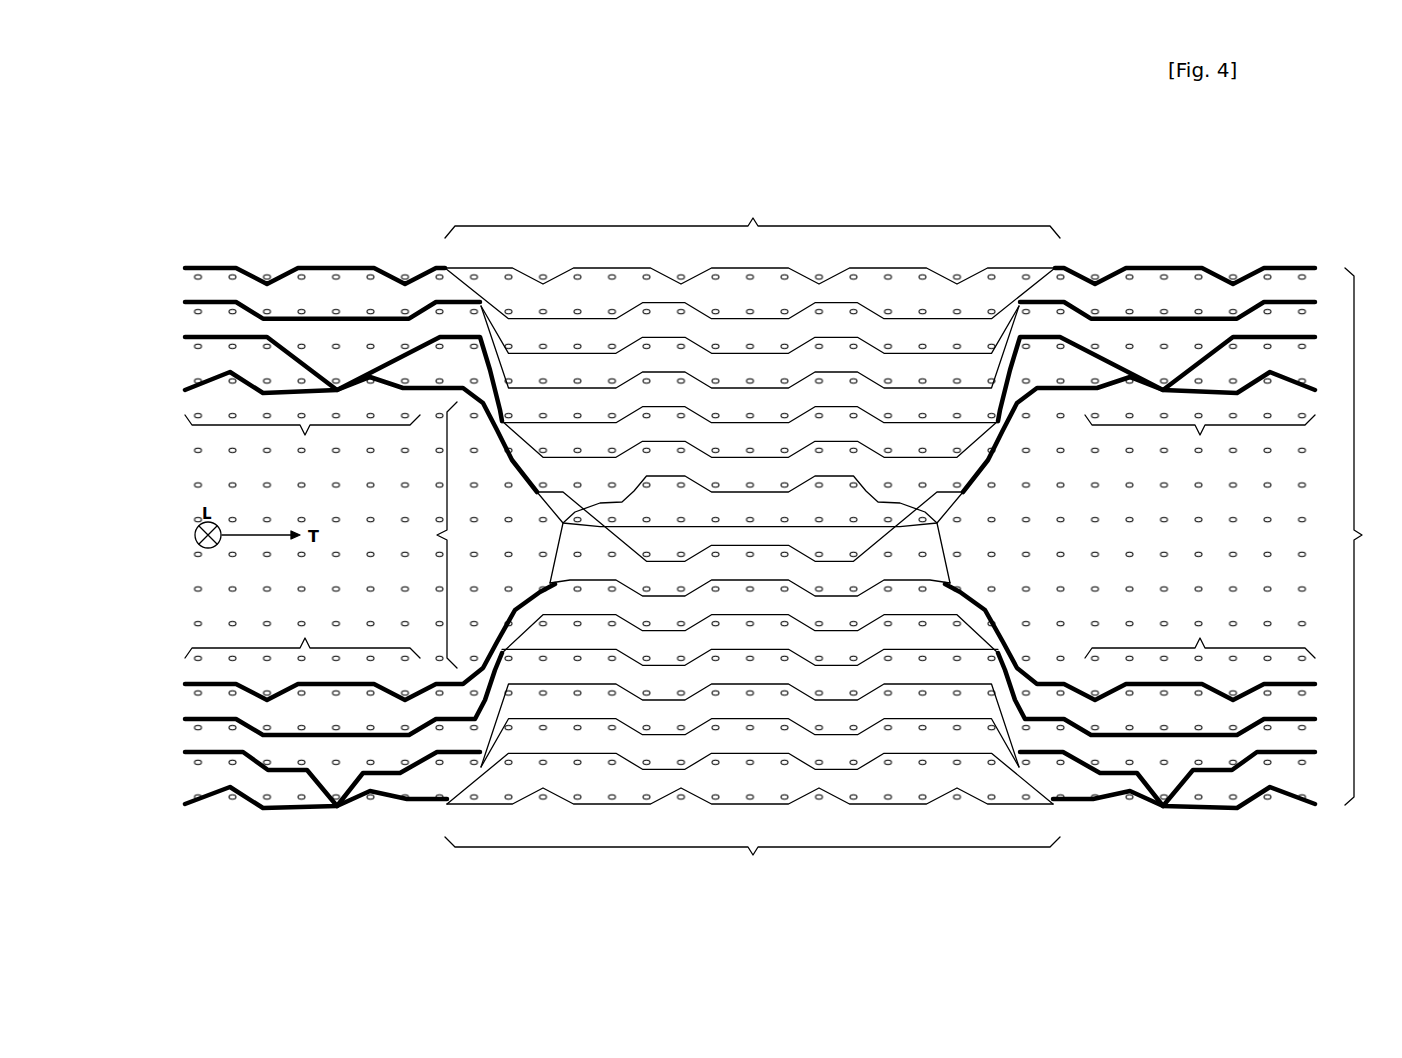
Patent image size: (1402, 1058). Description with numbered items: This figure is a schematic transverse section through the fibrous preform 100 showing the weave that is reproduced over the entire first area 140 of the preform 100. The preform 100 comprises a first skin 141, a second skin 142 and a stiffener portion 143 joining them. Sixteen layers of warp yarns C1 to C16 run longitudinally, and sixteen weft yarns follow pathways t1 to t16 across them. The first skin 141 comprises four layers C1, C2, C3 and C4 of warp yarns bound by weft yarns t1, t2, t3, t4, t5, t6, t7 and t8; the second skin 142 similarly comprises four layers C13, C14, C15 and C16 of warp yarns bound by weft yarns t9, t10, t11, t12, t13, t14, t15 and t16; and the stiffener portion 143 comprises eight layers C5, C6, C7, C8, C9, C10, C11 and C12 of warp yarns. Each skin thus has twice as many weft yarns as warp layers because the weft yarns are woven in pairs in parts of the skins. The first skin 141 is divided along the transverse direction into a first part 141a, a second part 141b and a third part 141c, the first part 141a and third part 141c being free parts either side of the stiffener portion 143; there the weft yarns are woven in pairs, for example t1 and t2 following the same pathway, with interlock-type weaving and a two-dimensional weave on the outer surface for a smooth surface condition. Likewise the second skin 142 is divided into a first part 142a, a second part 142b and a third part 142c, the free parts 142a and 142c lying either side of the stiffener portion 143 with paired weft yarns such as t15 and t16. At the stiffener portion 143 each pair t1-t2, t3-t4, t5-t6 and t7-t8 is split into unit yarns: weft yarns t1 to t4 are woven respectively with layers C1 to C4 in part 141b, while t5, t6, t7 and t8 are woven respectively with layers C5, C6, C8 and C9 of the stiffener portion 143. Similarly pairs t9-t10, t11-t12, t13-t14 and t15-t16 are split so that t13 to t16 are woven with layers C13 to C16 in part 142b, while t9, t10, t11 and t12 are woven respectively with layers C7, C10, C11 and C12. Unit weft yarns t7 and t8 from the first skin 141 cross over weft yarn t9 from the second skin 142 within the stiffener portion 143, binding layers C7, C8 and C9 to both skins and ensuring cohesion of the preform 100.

The preform 100 is at (1113, 224).
The first area 140 is at (1373, 536).
The first skin 141 is at (338, 249).
The first part of the first skin 141a is at (302, 440).
The second part of the first skin 141b is at (752, 217).
The third part of the first skin 141c is at (1200, 440).
The second skin 142 is at (313, 845).
The first part of the second skin 142a is at (302, 637).
The second part of the second skin 142b is at (752, 862).
The third part of the second skin 142c is at (1200, 637).
The stiffener portion 143 is at (428, 535).
The weft yarn t1 is at (470, 255).
The weft yarn t2 is at (482, 300).
The weft yarn t3 is at (558, 352).
The weft yarn t4 is at (558, 387).
The weft yarn t5 is at (558, 422).
The weft yarn t6 is at (558, 456).
The weft yarn t7 is at (558, 491).
The weft yarn t8 is at (665, 560).
The weft yarn t9 is at (667, 477).
The weft yarn t10 is at (632, 582).
The weft yarn t11 is at (597, 616).
The weft yarn t12 is at (597, 651).
The weft yarn t13 is at (597, 686).
The weft yarn t14 is at (597, 721).
The weft yarn t15 is at (597, 756).
The weft yarn t16 is at (597, 806).
The layer of warp yarns C1 is at (1298, 276).
The layer of warp yarns C2 is at (1298, 311).
The layer of warp yarns C3 is at (1298, 346).
The layer of warp yarns C4 is at (1298, 380).
The layer of warp yarns C5 is at (1012, 416).
The layer of warp yarns C6 is at (996, 449).
The layer of warp yarns C7 is at (972, 488).
The layer of warp yarns C8 is at (937, 520).
The layer of warp yarns C9 is at (930, 554).
The layer of warp yarns C10 is at (960, 588).
The layer of warp yarns C11 is at (1001, 626).
The layer of warp yarns C12 is at (1019, 660).
The layer of warp yarns C13 is at (1298, 689).
The layer of warp yarns C14 is at (1298, 724).
The layer of warp yarns C15 is at (1298, 757).
The layer of warp yarns C16 is at (1298, 794).